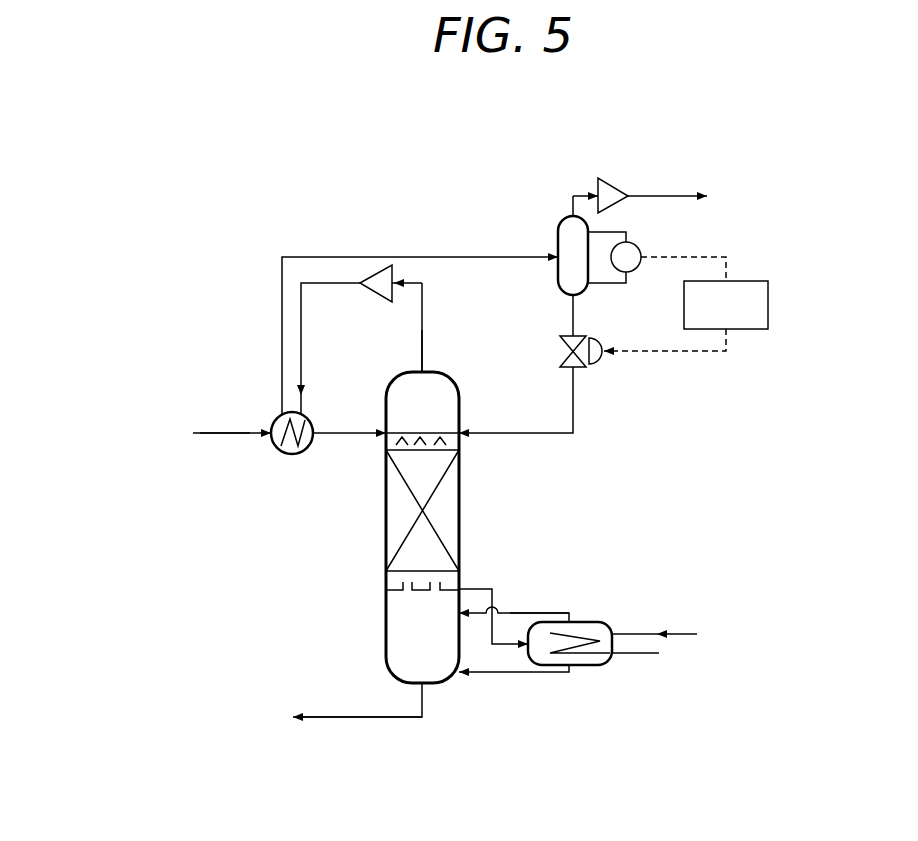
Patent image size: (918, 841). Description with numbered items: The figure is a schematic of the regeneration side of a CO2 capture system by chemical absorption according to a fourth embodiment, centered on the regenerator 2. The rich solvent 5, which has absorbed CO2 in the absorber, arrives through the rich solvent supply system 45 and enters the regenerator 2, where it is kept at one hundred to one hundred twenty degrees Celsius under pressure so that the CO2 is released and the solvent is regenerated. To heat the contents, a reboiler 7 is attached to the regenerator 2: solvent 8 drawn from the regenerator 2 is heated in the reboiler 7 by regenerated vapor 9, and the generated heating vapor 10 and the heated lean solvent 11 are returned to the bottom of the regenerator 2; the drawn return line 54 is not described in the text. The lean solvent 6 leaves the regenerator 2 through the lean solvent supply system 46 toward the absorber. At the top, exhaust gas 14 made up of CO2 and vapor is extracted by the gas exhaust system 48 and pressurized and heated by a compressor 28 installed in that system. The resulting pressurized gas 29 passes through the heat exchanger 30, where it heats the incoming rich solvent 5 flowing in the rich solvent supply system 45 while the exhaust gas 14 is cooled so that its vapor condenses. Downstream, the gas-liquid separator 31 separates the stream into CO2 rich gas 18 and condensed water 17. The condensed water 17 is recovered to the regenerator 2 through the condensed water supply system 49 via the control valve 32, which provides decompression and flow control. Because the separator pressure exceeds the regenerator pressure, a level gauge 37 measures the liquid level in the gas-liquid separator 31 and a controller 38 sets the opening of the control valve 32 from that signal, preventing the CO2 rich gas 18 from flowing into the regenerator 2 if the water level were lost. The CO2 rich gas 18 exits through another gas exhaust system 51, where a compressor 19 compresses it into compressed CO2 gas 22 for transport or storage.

The regenerator 2 is at (386, 395).
The rich solvent 5 is at (212, 433).
The rich solvent supply system 45 is at (232, 433).
The heat exchanger 30 is at (278, 414).
The pressurized gas 29 is at (302, 392).
The compressor 28 is at (394, 269).
The gas exhaust system 48 is at (422, 318).
The exhaust gas 14 is at (422, 350).
The gas-liquid separator 31 is at (558, 238).
The gas exhaust system 51 is at (573, 207).
The CO2 rich gas 18 is at (573, 196).
The compressor 19 is at (612, 178).
The compressed CO2 gas 22 is at (672, 196).
The level gauge 37 is at (641, 245).
The controller 38 is at (748, 281).
The condensed water supply system 49 is at (573, 318).
The control valve 32 is at (595, 363).
The condensed water 17 is at (573, 390).
The solvent 8 is at (478, 589).
The reboiler return line 54 is at (493, 600).
The heating vapor 10 is at (540, 613).
The reboiler 7 is at (588, 622).
The regenerated vapor 9 is at (683, 634).
The lean solvent 11 is at (508, 673).
The lean solvent supply system 46 is at (333, 717).
The lean solvent 6 is at (378, 717).